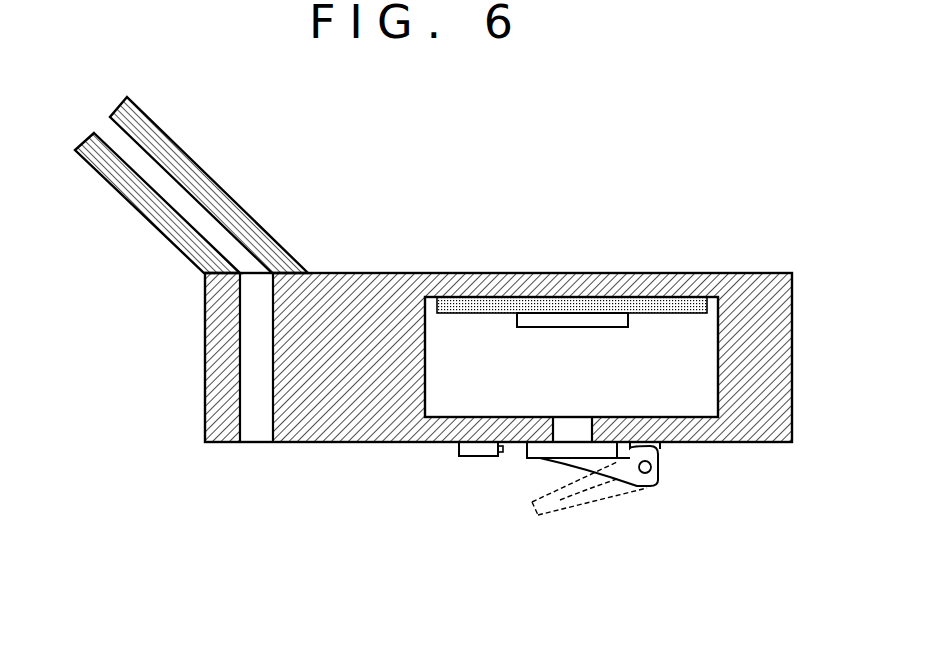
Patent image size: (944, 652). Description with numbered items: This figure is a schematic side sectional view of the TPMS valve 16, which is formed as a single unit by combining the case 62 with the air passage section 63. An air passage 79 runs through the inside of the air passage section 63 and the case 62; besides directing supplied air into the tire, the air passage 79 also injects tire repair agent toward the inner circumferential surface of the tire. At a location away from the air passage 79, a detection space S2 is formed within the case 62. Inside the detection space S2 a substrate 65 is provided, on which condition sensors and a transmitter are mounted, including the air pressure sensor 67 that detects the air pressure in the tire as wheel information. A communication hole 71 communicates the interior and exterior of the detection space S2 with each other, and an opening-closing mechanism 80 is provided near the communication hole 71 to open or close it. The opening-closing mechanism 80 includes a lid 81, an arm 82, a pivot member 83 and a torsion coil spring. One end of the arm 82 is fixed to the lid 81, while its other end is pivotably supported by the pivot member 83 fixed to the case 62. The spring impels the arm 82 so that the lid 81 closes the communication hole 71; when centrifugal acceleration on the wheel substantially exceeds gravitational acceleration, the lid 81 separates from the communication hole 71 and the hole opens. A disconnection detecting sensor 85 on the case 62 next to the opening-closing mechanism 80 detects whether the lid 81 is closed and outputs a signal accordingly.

The TPMS valve 16 is at (457, 322).
The case 62 is at (747, 272).
The air passage section 63 is at (168, 135).
The air passage 79 is at (170, 198).
The substrate 65 is at (580, 300).
The air pressure sensor 67 is at (537, 318).
The detection space S2 is at (708, 352).
The communication hole 71 is at (557, 443).
The disconnection detecting sensor 85 is at (463, 456).
The opening-closing mechanism 80 is at (584, 500).
The lid 81 is at (547, 462).
The arm 82 is at (623, 486).
The pivot member 83 is at (663, 450).